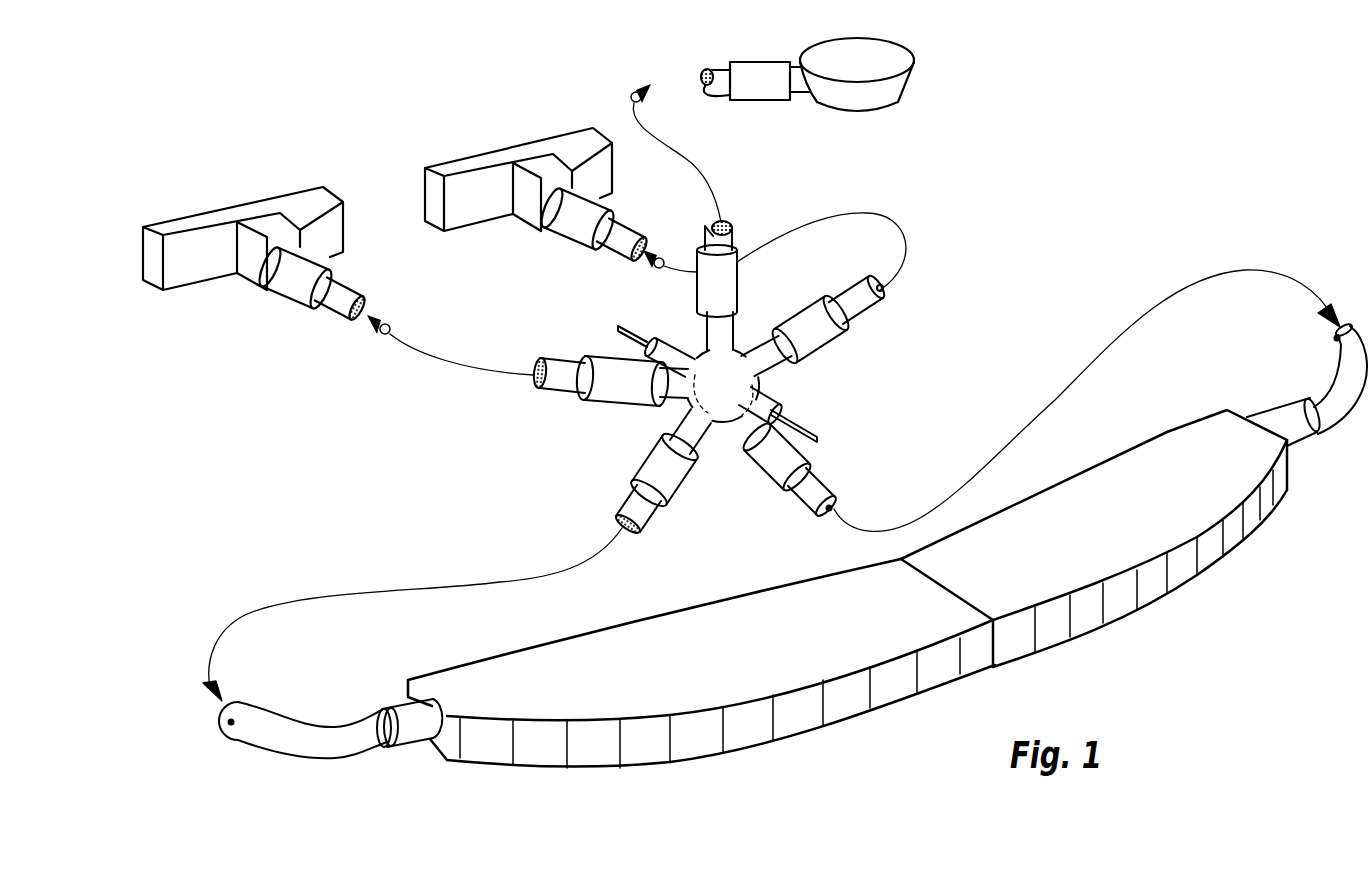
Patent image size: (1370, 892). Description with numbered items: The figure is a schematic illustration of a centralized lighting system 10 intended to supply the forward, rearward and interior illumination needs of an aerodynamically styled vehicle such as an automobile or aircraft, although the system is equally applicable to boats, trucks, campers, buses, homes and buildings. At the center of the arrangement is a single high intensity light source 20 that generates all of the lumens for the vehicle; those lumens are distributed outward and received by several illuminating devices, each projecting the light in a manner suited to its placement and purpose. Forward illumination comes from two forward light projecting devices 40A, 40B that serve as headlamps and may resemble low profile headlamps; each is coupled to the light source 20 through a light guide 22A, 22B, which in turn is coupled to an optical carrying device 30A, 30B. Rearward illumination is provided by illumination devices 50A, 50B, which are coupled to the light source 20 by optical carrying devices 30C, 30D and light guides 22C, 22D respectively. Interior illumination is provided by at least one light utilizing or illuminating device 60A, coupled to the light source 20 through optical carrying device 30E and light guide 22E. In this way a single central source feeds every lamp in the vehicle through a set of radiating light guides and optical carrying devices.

The centralized lighting system 10 is at (1030, 184).
The high intensity light source 20 is at (784, 273).
The light guide 22A is at (717, 452).
The light guide 22B is at (738, 424).
The light guide 22C is at (665, 393).
The light guide 22D is at (783, 369).
The light guide 22E is at (702, 328).
The optical carrying device 30A is at (601, 493).
The optical carrying device 30B is at (813, 457).
The optical carrying device 30C is at (585, 338).
The optical carrying device 30D is at (815, 344).
The optical carrying device 30E is at (661, 307).
The forward light projecting device 40A is at (682, 620).
The forward light projecting device 40B is at (1133, 456).
The illumination device 50A is at (235, 197).
The illumination device 50B is at (500, 152).
The illuminating device 60A is at (855, 118).